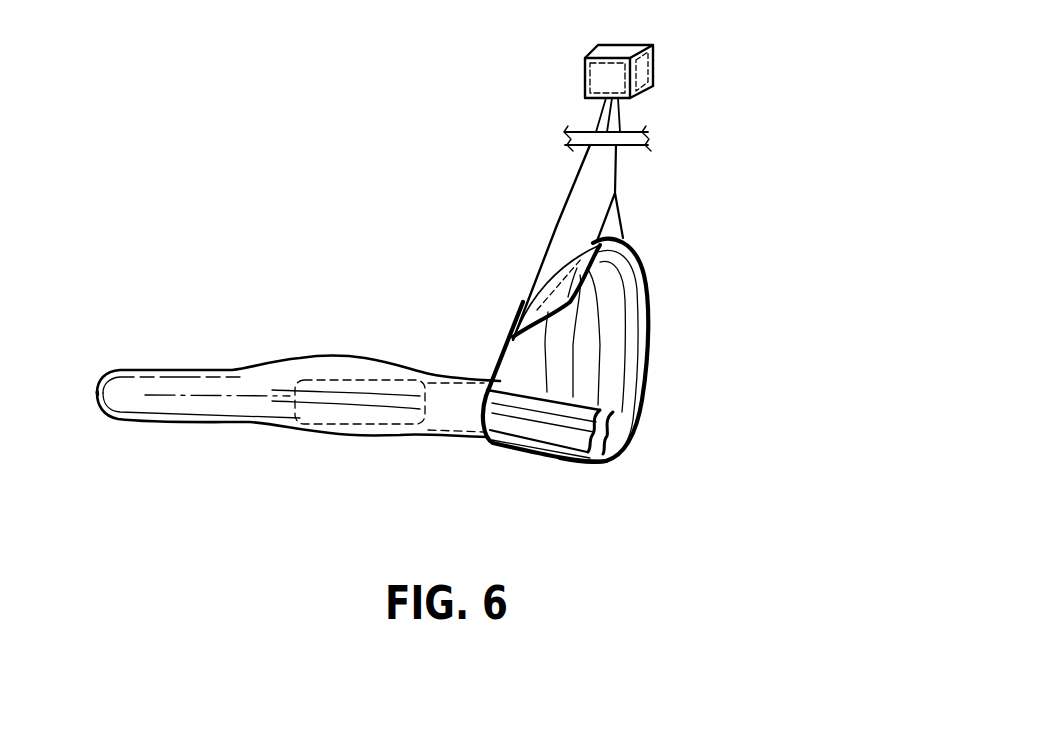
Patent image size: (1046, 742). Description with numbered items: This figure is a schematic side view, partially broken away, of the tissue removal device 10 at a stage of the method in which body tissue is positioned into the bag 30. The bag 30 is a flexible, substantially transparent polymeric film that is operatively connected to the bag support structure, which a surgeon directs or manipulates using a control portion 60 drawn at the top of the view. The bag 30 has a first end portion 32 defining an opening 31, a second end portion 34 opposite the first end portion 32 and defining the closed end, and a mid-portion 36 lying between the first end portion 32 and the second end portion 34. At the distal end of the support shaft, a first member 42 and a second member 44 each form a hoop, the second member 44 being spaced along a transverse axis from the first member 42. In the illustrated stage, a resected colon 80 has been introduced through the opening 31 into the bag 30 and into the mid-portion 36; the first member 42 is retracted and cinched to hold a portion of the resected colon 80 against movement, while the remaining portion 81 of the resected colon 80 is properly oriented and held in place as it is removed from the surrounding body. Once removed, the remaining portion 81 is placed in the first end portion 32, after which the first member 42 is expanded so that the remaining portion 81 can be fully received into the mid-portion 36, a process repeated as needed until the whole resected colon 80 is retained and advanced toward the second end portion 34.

The tissue removal device 10 is at (748, 238).
The bag 30 is at (645, 415).
The opening 31 is at (612, 323).
The first end portion 32 is at (576, 455).
The second end portion 34 is at (100, 410).
The mid-portion 36 is at (282, 372).
The first member 42 is at (534, 284).
The second member 44 is at (627, 222).
The control portion 60 is at (656, 60).
The resected colon 80 is at (425, 412).
The remaining portion 81 is at (515, 423).